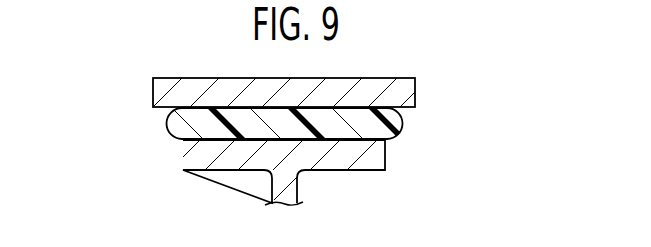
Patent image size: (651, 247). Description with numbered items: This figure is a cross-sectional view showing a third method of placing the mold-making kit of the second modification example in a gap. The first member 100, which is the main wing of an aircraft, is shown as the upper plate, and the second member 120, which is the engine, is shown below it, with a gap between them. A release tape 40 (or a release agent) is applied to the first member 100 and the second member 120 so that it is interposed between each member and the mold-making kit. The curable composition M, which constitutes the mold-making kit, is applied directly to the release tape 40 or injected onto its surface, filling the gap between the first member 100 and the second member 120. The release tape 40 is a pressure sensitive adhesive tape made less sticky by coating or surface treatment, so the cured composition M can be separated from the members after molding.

The first member 100 is at (405, 93).
The release tape 40 is at (397, 137).
The second member 120 is at (377, 153).
The curable composition M is at (173, 123).